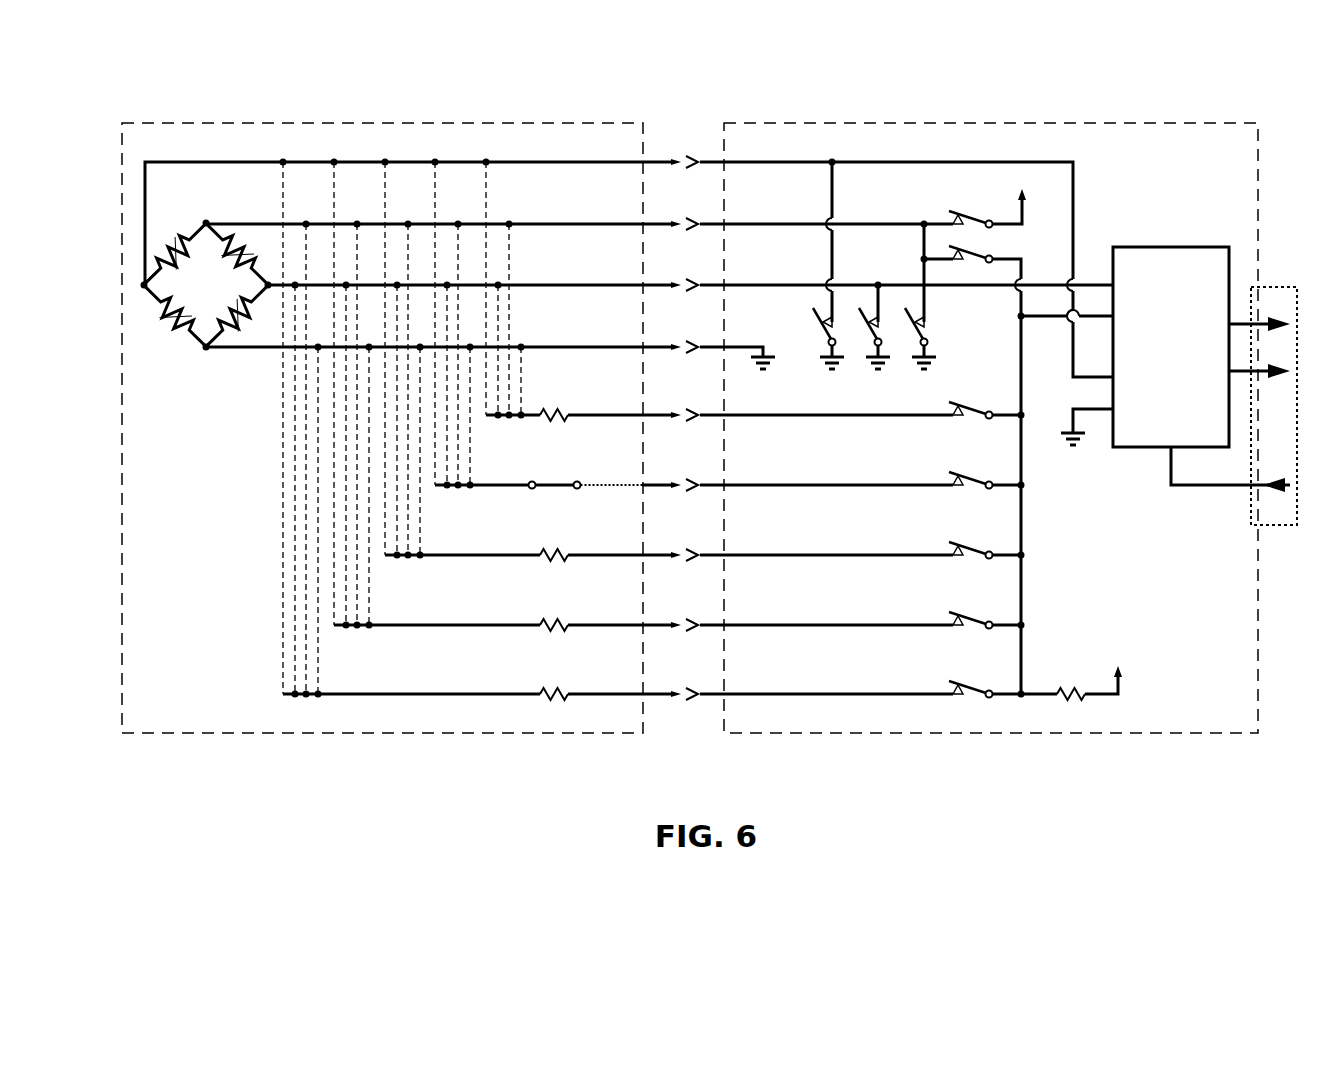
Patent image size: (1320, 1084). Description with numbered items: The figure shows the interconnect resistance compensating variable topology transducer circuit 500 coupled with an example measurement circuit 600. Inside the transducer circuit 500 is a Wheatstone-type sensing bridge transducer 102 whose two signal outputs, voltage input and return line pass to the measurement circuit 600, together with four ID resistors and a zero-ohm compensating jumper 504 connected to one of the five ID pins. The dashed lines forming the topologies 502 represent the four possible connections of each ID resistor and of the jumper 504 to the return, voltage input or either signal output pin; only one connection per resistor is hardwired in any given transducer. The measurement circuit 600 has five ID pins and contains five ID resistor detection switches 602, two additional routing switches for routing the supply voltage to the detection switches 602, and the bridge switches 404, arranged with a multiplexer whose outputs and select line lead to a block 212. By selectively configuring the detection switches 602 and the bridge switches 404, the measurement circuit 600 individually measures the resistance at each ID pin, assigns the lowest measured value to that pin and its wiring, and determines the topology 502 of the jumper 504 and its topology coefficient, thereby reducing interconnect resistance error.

The variable topology transducer circuit 500 is at (393, 88).
The measurement circuit 600 is at (973, 88).
The transducer 102 is at (206, 285).
The controller interface 212 is at (1286, 308).
The bridge switches 404 is at (805, 347).
The compensating jumper 504 is at (537, 502).
The topologies 502 is at (520, 704).
The ID resistor detection switches 602 is at (920, 695).